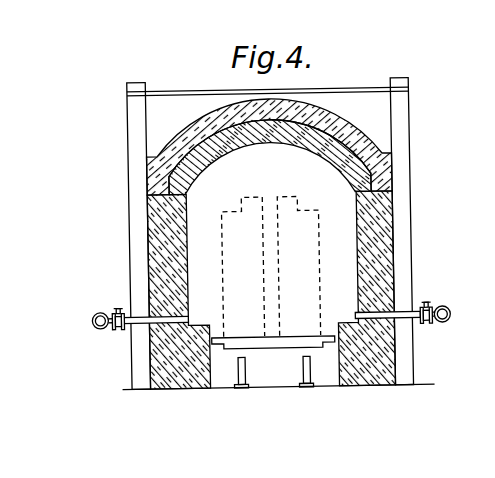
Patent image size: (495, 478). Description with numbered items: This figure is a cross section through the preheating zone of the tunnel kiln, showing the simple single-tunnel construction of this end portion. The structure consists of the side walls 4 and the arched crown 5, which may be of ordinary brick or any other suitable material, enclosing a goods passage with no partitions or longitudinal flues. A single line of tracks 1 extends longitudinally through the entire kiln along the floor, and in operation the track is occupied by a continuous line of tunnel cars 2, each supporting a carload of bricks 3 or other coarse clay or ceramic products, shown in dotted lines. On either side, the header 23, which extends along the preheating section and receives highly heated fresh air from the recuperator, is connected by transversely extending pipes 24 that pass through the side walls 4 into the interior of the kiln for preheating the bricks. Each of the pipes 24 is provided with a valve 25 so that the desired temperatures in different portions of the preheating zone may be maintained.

The tracks 1 is at (305, 390).
The tunnel cars 2 is at (272, 345).
The bricks 3 is at (301, 217).
The side walls 4 is at (163, 230).
The crown 5 is at (336, 141).
The header 23 is at (93, 325).
The transversely extending pipes 24 is at (189, 321).
The valves 25 is at (116, 306).